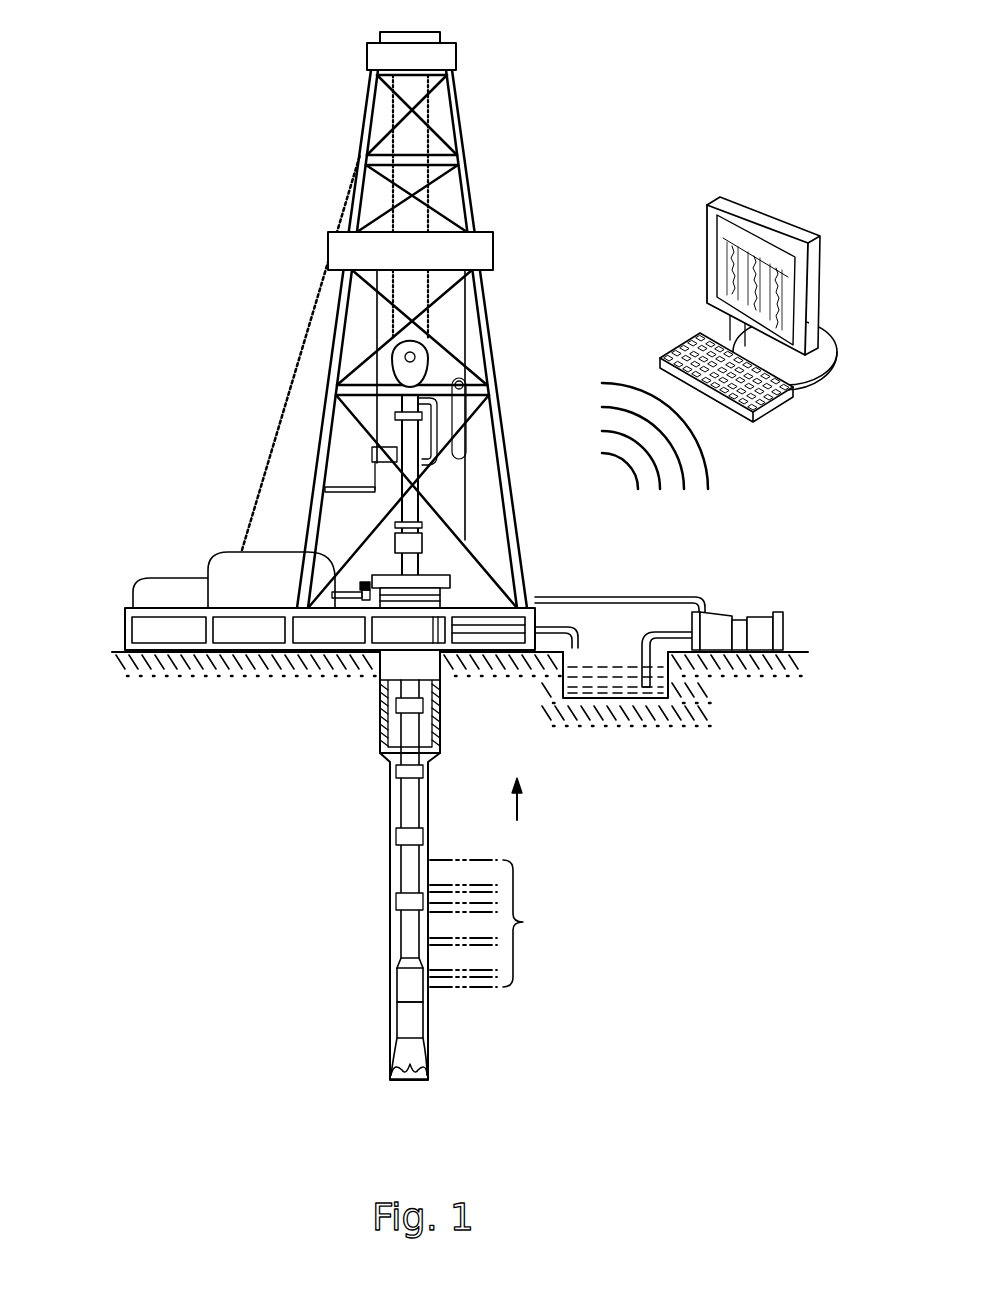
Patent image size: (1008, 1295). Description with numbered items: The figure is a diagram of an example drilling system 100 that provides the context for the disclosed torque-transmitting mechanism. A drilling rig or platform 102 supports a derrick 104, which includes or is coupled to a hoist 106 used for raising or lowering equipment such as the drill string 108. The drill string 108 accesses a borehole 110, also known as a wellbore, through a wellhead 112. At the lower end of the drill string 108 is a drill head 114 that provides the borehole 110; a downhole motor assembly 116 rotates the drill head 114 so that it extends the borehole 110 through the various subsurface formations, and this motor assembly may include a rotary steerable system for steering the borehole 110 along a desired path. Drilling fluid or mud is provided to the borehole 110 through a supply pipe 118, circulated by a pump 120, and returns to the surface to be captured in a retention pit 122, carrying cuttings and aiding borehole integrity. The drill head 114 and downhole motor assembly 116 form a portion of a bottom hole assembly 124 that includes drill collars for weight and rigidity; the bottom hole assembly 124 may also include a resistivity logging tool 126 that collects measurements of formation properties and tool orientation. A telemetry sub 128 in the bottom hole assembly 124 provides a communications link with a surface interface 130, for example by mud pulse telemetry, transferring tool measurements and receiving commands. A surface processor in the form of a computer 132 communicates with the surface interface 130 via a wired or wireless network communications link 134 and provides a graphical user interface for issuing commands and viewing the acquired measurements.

The drilling system 100 is at (230, 170).
The drilling rig or platform 102 is at (122, 632).
The derrick 104 is at (470, 190).
The hoist 106 is at (432, 352).
The drill string 108 is at (420, 790).
The borehole 110 is at (428, 822).
The wellhead 112 is at (437, 575).
The drill head 114 is at (425, 1065).
The downhole motor assembly 116 is at (403, 1050).
The supply pipe 118 is at (648, 597).
The pump 120 is at (722, 612).
The retention pit 122 is at (607, 682).
The bottom hole assembly 124 is at (392, 967).
The resistivity logging tool 126 is at (413, 1025).
The telemetry sub 128 is at (403, 992).
The surface interface 130 is at (420, 517).
The computer 132 is at (775, 215).
The network communications link 134 is at (703, 455).